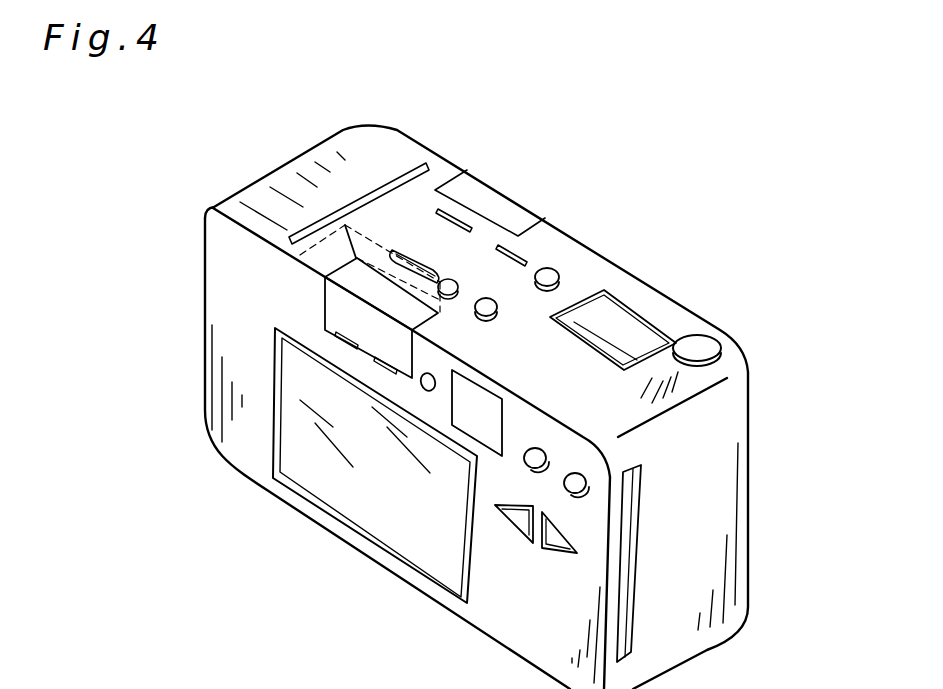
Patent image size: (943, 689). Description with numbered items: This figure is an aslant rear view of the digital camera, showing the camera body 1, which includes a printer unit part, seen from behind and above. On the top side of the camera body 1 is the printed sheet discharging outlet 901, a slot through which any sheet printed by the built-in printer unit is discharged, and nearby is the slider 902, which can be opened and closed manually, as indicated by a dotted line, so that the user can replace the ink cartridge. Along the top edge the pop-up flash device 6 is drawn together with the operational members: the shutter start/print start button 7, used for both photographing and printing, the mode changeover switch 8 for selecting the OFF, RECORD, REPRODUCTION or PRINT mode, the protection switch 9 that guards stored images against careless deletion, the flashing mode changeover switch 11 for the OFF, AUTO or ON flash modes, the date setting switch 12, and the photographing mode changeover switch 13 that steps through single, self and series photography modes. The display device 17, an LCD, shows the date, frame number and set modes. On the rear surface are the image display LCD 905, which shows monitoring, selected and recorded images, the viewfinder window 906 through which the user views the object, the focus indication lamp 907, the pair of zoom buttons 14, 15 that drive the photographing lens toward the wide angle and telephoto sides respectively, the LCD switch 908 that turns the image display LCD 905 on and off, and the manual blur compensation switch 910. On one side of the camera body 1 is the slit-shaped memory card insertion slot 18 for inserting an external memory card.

The camera body 1 is at (612, 256).
The flash device 6 is at (507, 197).
The shutter start/print start button 7 is at (704, 343).
The mode changeover switch 8 is at (459, 285).
The protection switch 9 is at (495, 300).
The flashing mode changeover switch 11 is at (557, 266).
The date setting switch 12 is at (517, 248).
The photographing mode changeover switch 13 is at (453, 218).
The zoom button 14 is at (517, 532).
The zoom button 15 is at (553, 548).
The display device 17 is at (643, 327).
The memory card insertion slot 18 is at (640, 537).
The printed sheet discharging outlet 901 is at (405, 168).
The slider 902 is at (333, 313).
The image display LCD 905 is at (362, 507).
The viewfinder window 906 is at (482, 407).
The focus indication lamp 907 is at (420, 383).
The LCD switch 908 is at (583, 473).
The manual blur compensation switch 910 is at (541, 450).